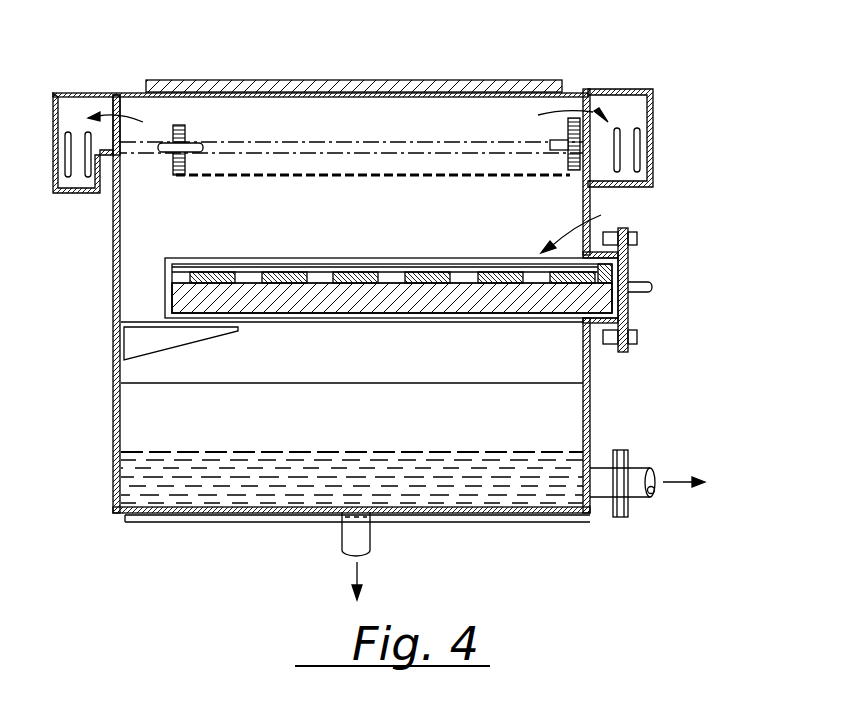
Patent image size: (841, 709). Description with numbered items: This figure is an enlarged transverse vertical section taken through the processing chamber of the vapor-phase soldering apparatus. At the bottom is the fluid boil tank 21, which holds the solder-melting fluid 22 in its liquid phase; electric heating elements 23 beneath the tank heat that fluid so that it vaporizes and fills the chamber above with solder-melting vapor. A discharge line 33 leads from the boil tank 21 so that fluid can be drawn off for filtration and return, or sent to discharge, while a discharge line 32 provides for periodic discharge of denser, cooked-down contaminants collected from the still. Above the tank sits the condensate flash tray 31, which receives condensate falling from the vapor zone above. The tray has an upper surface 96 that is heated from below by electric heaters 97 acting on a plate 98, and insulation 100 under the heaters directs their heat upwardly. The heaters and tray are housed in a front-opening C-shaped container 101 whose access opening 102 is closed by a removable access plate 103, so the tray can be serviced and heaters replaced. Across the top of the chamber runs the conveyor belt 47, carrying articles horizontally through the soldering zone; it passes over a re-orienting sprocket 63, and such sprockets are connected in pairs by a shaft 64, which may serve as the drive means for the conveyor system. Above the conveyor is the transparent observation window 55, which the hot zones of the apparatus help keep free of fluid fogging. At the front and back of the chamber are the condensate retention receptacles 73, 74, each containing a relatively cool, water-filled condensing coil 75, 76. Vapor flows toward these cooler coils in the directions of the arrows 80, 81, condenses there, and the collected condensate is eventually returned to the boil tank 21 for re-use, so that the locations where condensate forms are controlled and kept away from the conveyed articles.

The fluid boil tank 21 is at (182, 422).
The solder-melting fluid 22 is at (558, 445).
The electric heating elements 23 is at (483, 515).
The condensate flash tray 31 is at (583, 226).
The discharge line 32 is at (640, 478).
The discharge line 33 is at (345, 535).
The conveyor belt 47 is at (357, 177).
The observation window 55 is at (305, 88).
The re-orienting sprocket 63 is at (183, 120).
The shaft 64 is at (556, 152).
The condensate retention receptacle 73 is at (625, 177).
The condensate retention receptacle 74 is at (78, 180).
The condensing coil 75 is at (650, 122).
The condensing coil 76 is at (68, 130).
The vapor flow arrow 80 is at (597, 113).
The vapor flow arrow 81 is at (131, 118).
The upper surface 96 is at (218, 258).
The electric heaters 97 is at (597, 272).
The plate 98 is at (432, 258).
The insulation 100 is at (202, 295).
The C-shaped container 101 is at (355, 318).
The access opening 102 is at (618, 275).
The access plate 103 is at (632, 318).